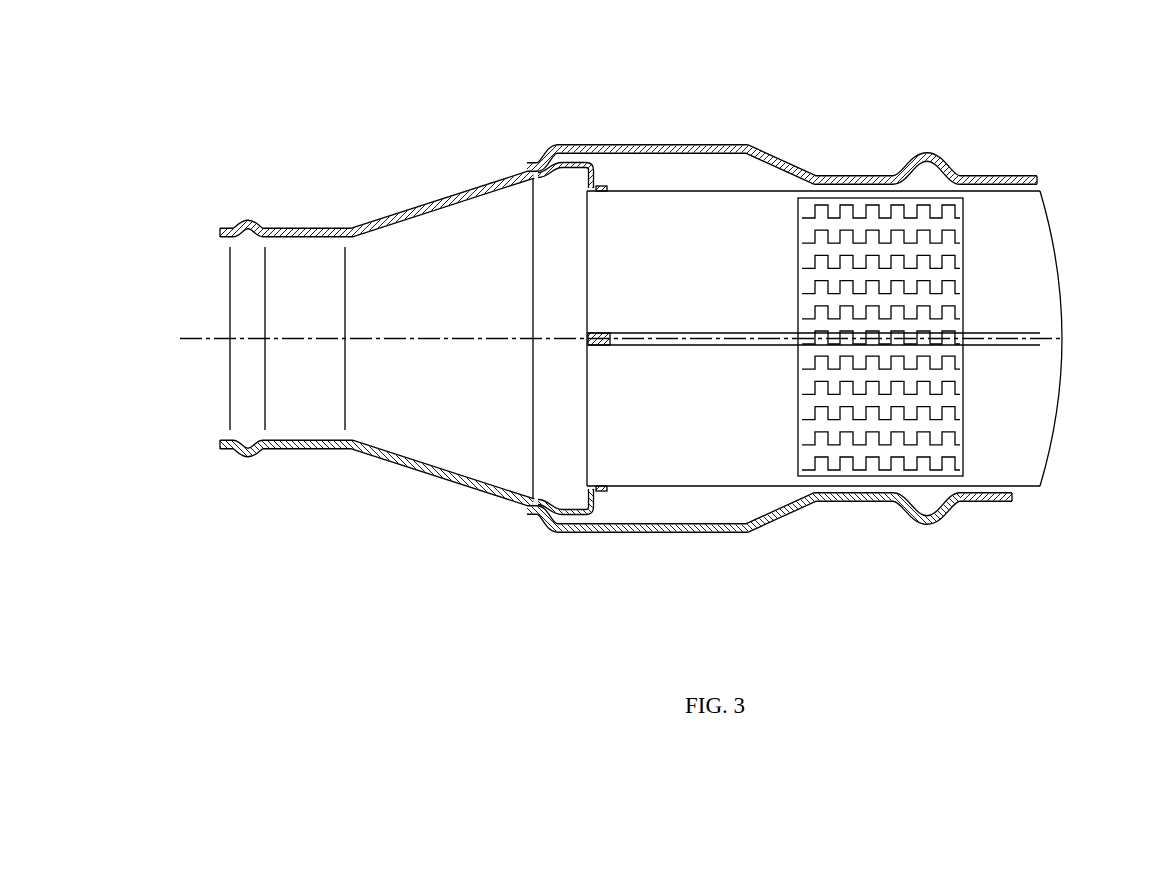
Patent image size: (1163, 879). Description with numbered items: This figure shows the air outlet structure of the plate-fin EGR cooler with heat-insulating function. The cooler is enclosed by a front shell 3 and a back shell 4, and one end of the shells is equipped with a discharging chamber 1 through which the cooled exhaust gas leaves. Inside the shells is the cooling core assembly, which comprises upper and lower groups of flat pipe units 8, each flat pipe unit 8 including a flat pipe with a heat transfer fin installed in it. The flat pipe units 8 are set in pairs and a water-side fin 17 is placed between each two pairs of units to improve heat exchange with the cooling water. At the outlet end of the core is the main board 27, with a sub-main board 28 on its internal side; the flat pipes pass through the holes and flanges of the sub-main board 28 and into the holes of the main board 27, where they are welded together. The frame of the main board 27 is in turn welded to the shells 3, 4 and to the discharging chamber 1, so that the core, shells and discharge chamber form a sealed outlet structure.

The discharging chamber 1 is at (287, 415).
The front shell 3 is at (943, 515).
The back shell 4 is at (1000, 177).
The flat pipe unit 8 is at (728, 265).
The water-side fin 17 is at (847, 287).
The main board 27 is at (575, 513).
The sub-main board 28 is at (603, 487).